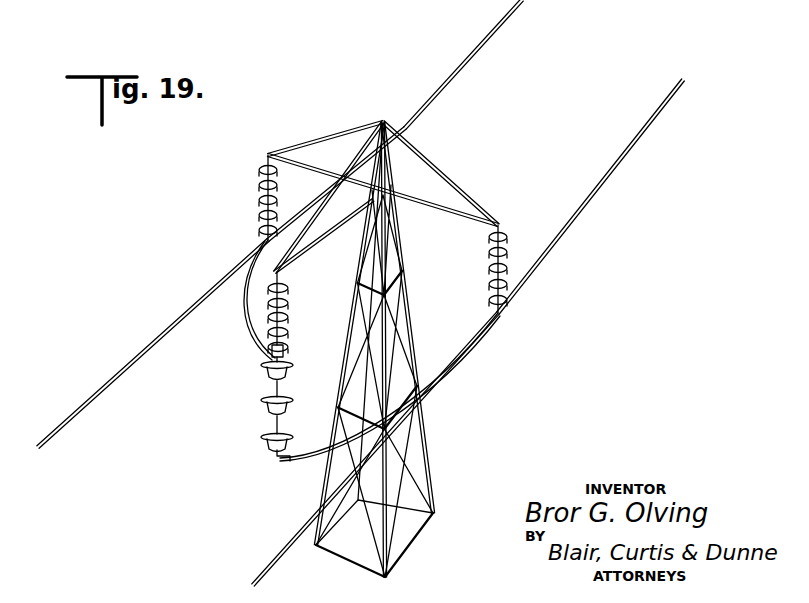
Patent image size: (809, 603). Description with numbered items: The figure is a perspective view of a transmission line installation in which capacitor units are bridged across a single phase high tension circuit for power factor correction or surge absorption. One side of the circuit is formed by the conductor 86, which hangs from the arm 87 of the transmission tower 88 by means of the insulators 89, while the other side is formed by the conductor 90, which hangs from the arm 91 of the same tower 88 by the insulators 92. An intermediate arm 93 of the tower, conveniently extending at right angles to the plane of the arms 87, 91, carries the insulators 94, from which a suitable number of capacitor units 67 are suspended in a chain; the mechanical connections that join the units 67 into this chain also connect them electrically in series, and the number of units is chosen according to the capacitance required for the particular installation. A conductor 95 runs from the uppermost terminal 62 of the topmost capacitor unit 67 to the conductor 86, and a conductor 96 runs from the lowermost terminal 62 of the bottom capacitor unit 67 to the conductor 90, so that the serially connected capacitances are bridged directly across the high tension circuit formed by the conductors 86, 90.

The terminal 62 is at (284, 356).
The capacitor unit 67 is at (262, 371).
The conductor 86 is at (520, 4).
The arm 87 is at (337, 135).
The transmission tower 88 is at (411, 328).
The insulator 89 is at (259, 192).
The conductor 90 is at (629, 157).
The arm 91 is at (442, 169).
The insulator 92 is at (489, 263).
The intermediate arm 93 is at (321, 243).
The insulator 94 is at (288, 313).
The conductor 95 is at (250, 322).
The conductor 96 is at (300, 460).